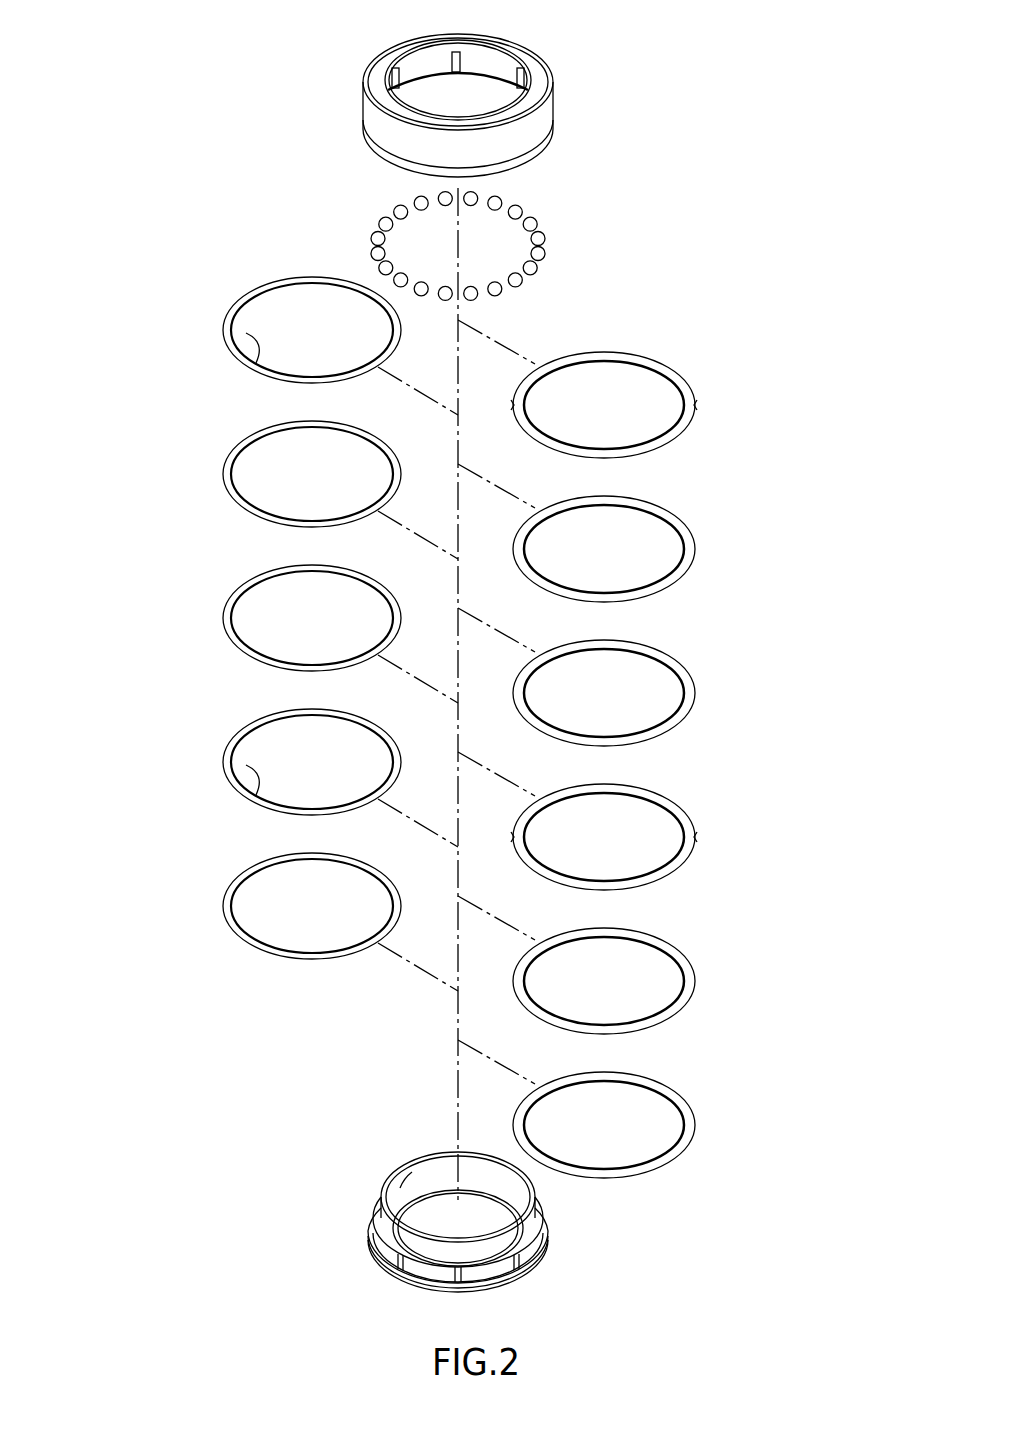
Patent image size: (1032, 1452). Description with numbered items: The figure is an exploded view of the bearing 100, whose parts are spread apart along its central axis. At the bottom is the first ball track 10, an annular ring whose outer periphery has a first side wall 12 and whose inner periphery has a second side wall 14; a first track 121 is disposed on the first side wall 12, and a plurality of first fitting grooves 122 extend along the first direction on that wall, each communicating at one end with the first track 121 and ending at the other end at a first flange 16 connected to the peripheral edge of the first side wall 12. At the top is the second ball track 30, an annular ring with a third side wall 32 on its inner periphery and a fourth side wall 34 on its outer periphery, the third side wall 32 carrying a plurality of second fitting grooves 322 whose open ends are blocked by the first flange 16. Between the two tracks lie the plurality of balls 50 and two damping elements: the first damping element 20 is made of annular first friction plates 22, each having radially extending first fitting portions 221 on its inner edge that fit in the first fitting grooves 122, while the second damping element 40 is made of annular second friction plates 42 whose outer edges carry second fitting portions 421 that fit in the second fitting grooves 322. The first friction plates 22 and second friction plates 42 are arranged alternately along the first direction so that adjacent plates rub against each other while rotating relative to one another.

The bearing 100 is at (675, 214).
The first ball track 10 is at (481, 1240).
The first side wall 12 is at (481, 1278).
The first track 121 is at (530, 1224).
The first fitting grooves 122 is at (523, 1272).
The second side wall 14 is at (406, 1168).
The first flange 16 is at (548, 1236).
The first damping element 20 is at (265, 613).
The first friction plates 22 is at (237, 305).
The first fitting portions 221 is at (258, 355).
The second ball track 30 is at (499, 100).
The third side wall 32 is at (418, 65).
The second fitting grooves 322 is at (462, 58).
The fourth side wall 34 is at (525, 148).
The second damping element 40 is at (649, 746).
The second friction plates 42 is at (686, 390).
The second fitting portions 421 is at (696, 403).
The balls 50 is at (540, 256).